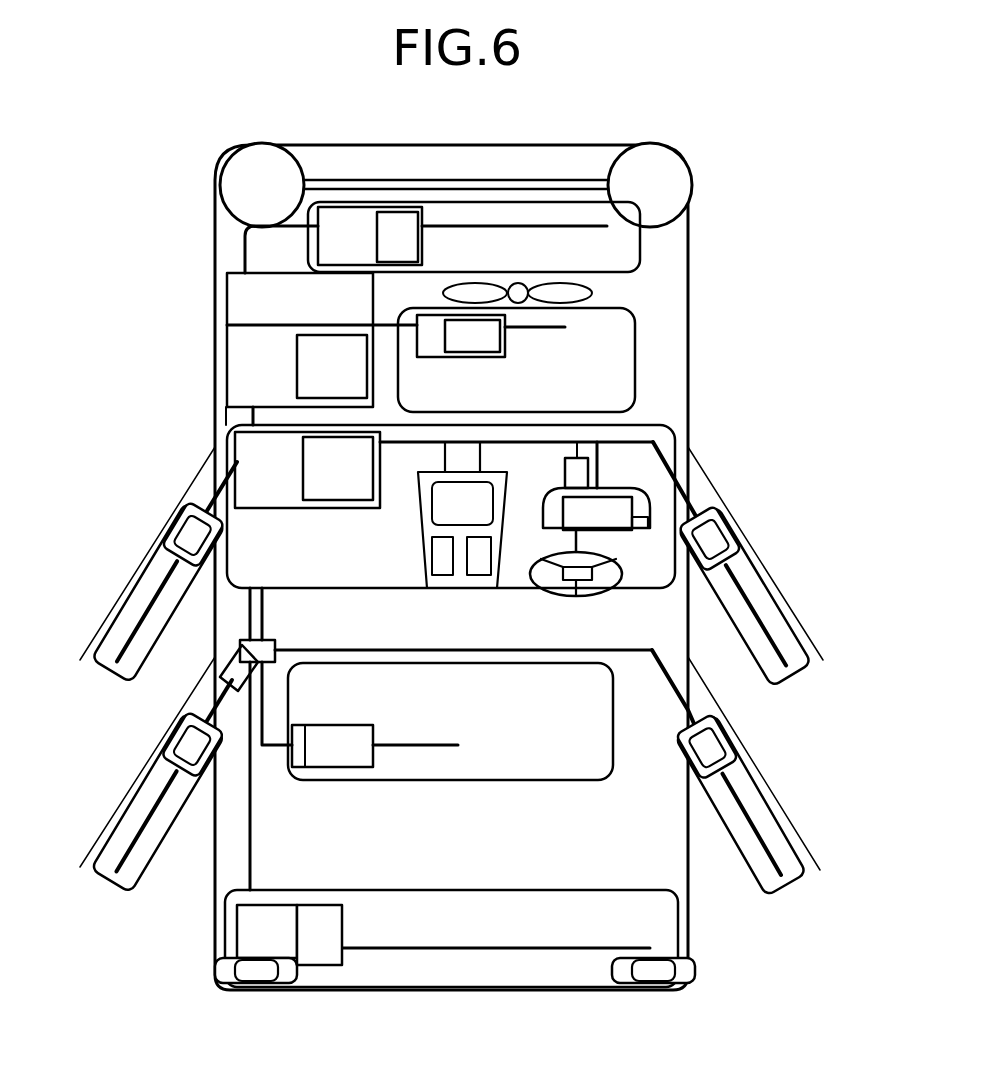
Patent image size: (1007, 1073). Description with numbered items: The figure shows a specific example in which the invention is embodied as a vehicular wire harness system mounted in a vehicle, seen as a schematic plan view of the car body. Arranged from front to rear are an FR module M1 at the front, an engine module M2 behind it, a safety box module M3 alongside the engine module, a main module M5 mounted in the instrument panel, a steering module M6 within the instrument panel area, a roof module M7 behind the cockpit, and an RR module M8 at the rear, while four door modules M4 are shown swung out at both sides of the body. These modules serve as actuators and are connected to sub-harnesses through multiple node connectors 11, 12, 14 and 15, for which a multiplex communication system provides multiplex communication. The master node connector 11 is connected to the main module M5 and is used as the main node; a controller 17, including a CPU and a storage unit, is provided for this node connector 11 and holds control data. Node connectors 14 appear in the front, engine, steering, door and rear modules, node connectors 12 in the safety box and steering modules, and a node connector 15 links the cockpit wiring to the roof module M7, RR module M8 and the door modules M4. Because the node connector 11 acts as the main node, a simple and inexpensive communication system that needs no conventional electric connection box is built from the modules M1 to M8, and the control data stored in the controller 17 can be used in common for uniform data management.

The master node connector 11 is at (357, 486).
The node connector 12 is at (330, 360).
The node connector 14 is at (396, 215).
The node connector 15 is at (276, 651).
The controller 17 is at (247, 443).
The FR module M1 is at (575, 215).
The engine module M2 is at (620, 362).
The safety box module M3 is at (232, 332).
The door module M4 is at (777, 622).
The main module M5 is at (248, 520).
The steering module M6 is at (639, 530).
The roof module M7 is at (548, 768).
The RR module M8 is at (548, 977).